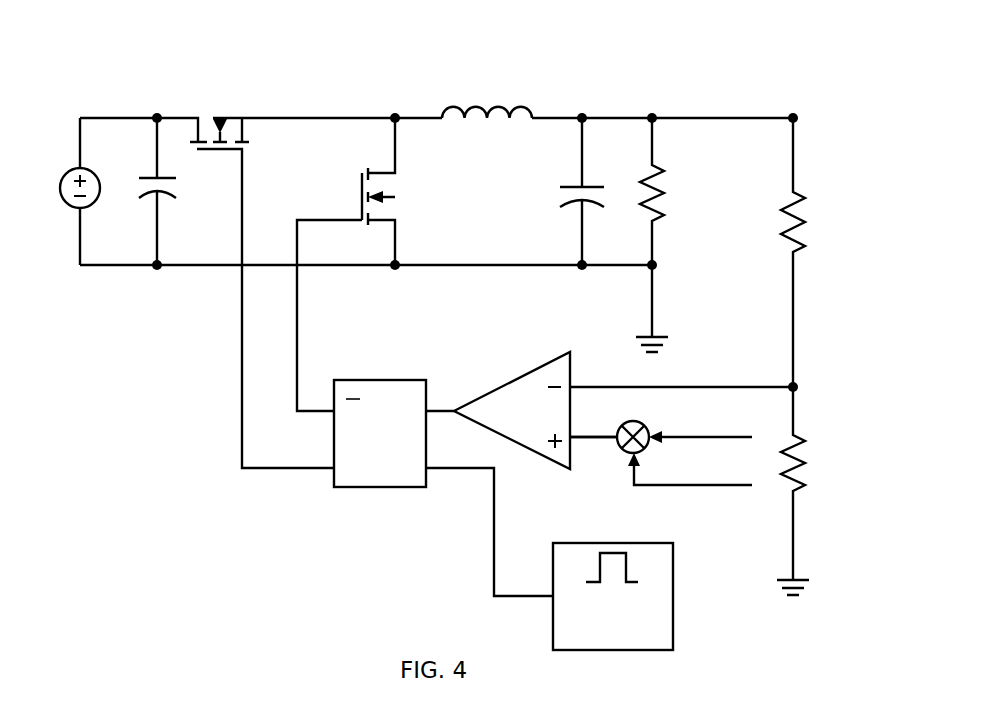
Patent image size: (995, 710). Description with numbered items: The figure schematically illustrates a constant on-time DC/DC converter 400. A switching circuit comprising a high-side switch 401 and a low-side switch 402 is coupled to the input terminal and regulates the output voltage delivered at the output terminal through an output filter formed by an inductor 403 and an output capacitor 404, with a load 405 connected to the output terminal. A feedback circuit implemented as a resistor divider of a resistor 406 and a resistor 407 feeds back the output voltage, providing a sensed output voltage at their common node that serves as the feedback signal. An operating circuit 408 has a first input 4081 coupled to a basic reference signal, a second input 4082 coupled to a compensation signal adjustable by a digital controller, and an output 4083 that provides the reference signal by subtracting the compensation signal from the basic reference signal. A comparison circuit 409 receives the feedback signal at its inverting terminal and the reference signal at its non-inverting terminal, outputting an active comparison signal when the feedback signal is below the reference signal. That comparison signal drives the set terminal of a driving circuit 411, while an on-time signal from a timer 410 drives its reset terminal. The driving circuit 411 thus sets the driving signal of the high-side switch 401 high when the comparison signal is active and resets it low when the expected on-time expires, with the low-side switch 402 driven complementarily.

The converter 400 is at (714, 51).
The high-side switch 401 is at (220, 117).
The low-side switch 402 is at (398, 200).
The inductor 403 is at (470, 103).
The output capacitor 404 is at (558, 207).
The load 405 is at (660, 200).
The resistor 406 is at (803, 222).
The resistor 407 is at (800, 468).
The operating circuit 408 is at (624, 450).
The first input 4081 is at (658, 437).
The second input 4082 is at (653, 485).
The output 4083 is at (578, 437).
The comparison circuit 409 is at (538, 368).
The timer 410 is at (612, 543).
The driving circuit 411 is at (382, 380).